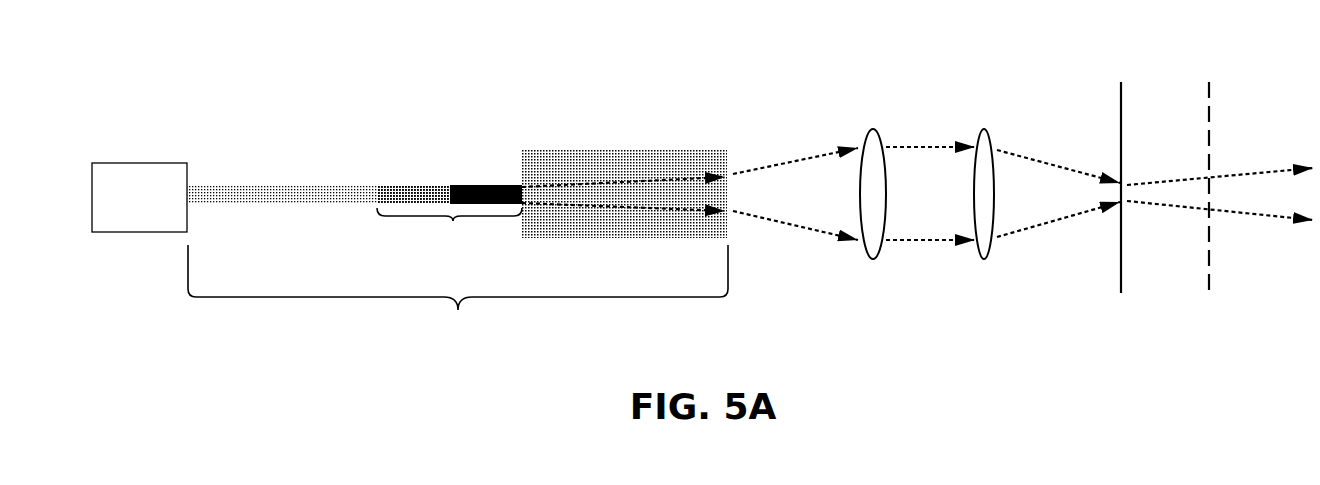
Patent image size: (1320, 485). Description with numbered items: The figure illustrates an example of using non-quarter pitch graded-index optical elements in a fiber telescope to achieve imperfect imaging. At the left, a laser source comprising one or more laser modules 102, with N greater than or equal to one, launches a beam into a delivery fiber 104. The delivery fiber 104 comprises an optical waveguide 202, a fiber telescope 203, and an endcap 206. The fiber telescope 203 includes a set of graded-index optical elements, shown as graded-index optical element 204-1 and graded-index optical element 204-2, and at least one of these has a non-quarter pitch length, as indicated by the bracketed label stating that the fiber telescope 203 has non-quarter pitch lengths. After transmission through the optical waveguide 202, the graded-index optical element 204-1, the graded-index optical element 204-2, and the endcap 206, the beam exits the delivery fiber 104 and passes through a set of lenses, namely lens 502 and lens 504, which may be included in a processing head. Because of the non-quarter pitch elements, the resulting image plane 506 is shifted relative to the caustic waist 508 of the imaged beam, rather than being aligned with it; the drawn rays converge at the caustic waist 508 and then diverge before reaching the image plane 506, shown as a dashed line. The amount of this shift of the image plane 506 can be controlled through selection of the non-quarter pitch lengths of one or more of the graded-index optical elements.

The laser module 102 is at (139, 197).
The delivery fiber 104 is at (458, 292).
The optical waveguide 202 is at (270, 185).
The fiber telescope 203 is at (443, 244).
The graded-index optical element 204-1 is at (413, 185).
The graded-index optical element 204-2 is at (487, 185).
The endcap 206 is at (607, 149).
The lens 502 is at (873, 127).
The lens 504 is at (984, 127).
The image plane 506 is at (1209, 174).
The caustic waist 508 is at (1121, 174).